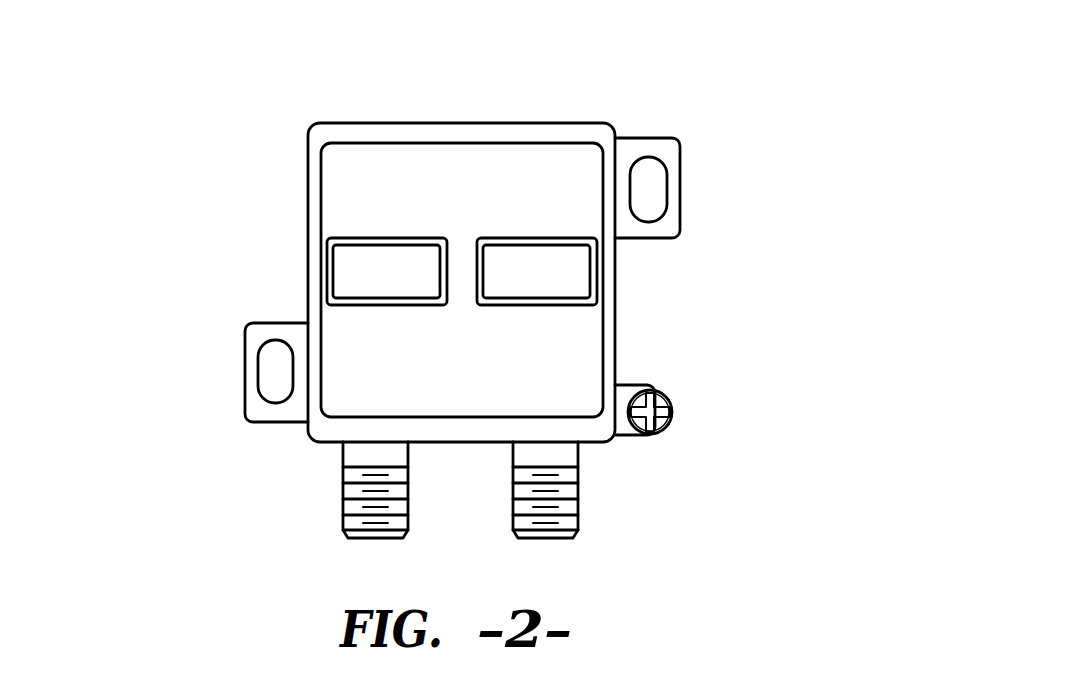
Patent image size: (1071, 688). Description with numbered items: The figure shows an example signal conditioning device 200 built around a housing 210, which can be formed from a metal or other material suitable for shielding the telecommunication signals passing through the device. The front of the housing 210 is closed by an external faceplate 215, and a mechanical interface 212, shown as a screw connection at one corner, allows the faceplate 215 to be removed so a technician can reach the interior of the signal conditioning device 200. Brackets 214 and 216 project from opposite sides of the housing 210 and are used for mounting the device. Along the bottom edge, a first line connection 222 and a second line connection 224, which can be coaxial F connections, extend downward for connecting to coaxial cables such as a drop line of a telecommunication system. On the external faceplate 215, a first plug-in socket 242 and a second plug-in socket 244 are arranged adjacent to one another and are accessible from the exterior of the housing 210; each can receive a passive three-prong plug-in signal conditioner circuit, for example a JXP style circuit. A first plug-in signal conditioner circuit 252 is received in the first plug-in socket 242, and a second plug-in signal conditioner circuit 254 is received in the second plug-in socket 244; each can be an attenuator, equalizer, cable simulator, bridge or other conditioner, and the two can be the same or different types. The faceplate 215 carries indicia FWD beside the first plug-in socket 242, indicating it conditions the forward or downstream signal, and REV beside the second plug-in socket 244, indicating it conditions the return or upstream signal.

The signal conditioning device 200 is at (655, 89).
The housing 210 is at (482, 135).
The external faceplate 215 is at (342, 178).
The bracket 214 is at (670, 197).
The bracket 216 is at (252, 367).
The mechanical interface 212 is at (677, 412).
The first plug-in socket 242 is at (328, 287).
The first plug-in signal conditioner circuit 252 is at (350, 255).
The second plug-in socket 244 is at (583, 305).
The second plug-in signal conditioner circuit 254 is at (575, 262).
The first line connection 222 is at (370, 540).
The second line connection 224 is at (548, 540).